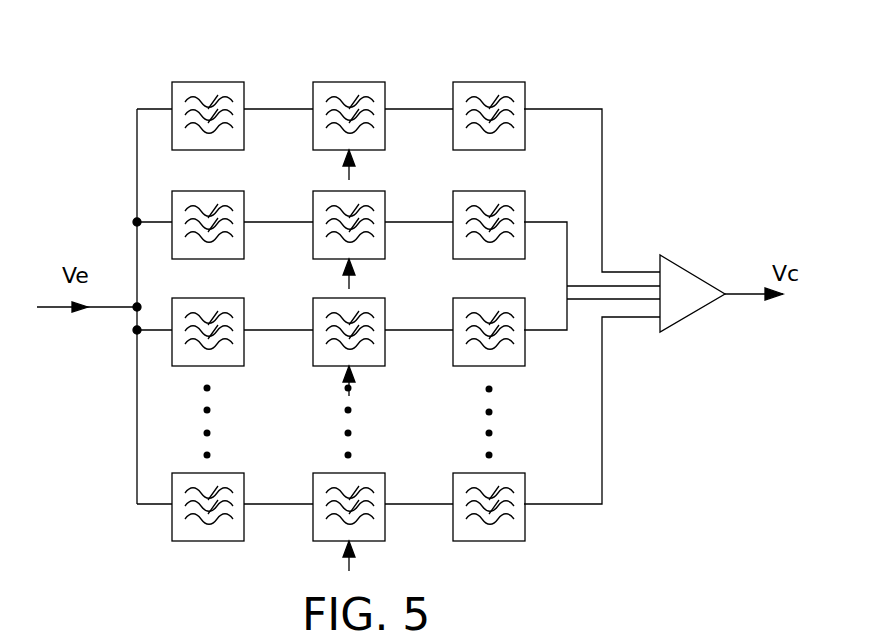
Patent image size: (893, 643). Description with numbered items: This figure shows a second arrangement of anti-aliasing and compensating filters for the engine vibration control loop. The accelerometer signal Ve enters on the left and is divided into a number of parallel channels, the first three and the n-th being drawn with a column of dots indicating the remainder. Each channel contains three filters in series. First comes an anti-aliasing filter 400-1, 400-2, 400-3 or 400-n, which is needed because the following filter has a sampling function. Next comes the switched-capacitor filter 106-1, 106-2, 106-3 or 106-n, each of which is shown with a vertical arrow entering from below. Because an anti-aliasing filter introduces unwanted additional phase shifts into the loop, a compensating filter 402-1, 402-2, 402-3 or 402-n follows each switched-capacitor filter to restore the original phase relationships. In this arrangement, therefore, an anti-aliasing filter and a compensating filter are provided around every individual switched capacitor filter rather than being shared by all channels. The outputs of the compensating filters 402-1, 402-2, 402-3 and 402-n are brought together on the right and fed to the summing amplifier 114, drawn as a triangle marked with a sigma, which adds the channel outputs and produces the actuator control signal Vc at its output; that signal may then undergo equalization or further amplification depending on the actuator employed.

The anti-aliasing filter 400-1 is at (258, 64).
The anti-aliasing filter 400-2 is at (273, 185).
The anti-aliasing filter 400-3 is at (283, 283).
The anti-aliasing filter 400-n is at (282, 462).
The switched-capacitor filter 106-1 is at (393, 76).
The switched-capacitor filter 106-2 is at (407, 183).
The switched-capacitor filter 106-3 is at (413, 293).
The switched-capacitor filter 106-n is at (382, 473).
The compensating filter 402-1 is at (528, 68).
The compensating filter 402-2 is at (533, 183).
The compensating filter 402-3 is at (524, 343).
The compensating filter 402-n is at (565, 462).
The summing amplifier 114 is at (712, 284).